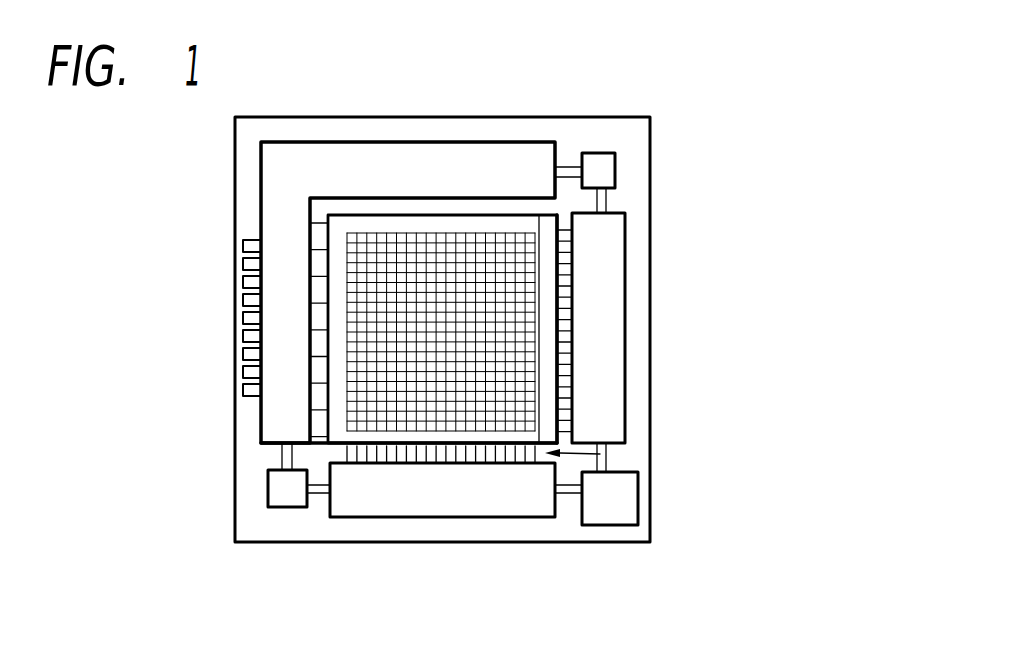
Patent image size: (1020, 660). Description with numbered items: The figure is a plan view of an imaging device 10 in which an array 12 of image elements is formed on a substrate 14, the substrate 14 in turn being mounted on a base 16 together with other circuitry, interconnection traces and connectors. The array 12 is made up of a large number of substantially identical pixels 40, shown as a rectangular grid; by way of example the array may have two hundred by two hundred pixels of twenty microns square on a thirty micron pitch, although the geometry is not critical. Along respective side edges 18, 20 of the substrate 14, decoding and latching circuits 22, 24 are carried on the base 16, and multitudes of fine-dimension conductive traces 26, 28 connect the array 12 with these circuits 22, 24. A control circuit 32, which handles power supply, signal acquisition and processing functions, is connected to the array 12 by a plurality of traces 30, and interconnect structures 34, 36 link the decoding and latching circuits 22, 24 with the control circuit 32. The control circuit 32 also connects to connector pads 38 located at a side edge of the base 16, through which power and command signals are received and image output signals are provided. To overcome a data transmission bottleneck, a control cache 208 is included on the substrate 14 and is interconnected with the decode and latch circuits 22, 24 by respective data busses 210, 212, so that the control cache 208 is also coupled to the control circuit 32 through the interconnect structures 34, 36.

The imaging device 10 is at (680, 50).
The array 12 is at (513, 350).
The substrate 14 is at (539, 232).
The base 16 is at (625, 436).
The side edge 18 is at (518, 448).
The side edge 20 is at (562, 350).
The decoding and latching circuit 22 is at (455, 497).
The decoding and latching circuit 24 is at (603, 413).
The conductive traces 26 is at (600, 454).
The conductive traces 28 is at (566, 292).
The traces 30 is at (322, 212).
The control circuit 32 is at (285, 170).
The interconnect structure 34 is at (398, 237).
The interconnect structure 36 is at (597, 173).
The connector pads 38 is at (233, 360).
The pixels 40 is at (447, 270).
The control cache 208 is at (632, 542).
The data bus 210 is at (567, 500).
The data bus 212 is at (605, 460).